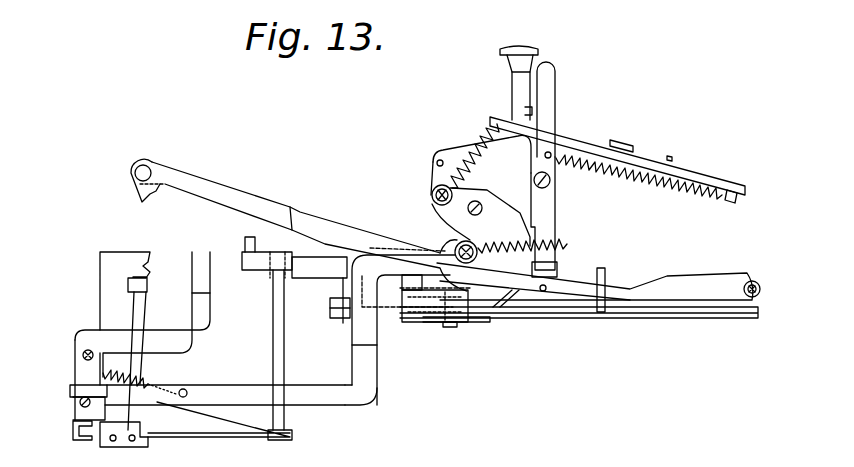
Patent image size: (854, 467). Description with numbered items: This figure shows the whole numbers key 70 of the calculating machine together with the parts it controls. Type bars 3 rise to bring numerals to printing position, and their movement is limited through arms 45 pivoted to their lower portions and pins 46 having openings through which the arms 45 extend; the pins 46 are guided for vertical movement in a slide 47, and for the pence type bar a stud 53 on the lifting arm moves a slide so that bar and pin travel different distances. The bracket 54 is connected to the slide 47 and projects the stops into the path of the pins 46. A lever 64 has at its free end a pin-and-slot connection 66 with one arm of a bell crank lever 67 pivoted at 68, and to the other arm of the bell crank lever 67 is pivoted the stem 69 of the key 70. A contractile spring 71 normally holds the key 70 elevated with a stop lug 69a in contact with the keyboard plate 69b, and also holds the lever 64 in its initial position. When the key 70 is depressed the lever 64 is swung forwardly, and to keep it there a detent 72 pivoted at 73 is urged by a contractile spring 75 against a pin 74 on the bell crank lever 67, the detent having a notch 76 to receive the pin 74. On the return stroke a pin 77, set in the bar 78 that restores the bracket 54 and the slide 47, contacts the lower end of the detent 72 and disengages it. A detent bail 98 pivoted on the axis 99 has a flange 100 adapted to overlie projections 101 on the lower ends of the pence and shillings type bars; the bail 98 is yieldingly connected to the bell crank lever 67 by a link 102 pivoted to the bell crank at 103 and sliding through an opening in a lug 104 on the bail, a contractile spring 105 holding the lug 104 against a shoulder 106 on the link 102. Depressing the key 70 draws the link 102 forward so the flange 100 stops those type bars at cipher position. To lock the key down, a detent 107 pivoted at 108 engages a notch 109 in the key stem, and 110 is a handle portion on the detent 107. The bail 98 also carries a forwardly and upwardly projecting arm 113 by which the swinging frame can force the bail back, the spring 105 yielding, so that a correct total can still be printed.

The type bar 3 is at (112, 254).
The arm 45 is at (218, 428).
The pin 46 is at (286, 407).
The slide 47 is at (268, 311).
The stud 53 is at (332, 300).
The bracket 54 is at (312, 264).
The lever 64 is at (420, 323).
The pin-and-slot connection 66 is at (460, 327).
The bell crank lever 67 is at (490, 212).
The pivot 68 is at (477, 201).
The stem 69 is at (479, 130).
The stop lug 69a is at (507, 130).
The keyboard plate 69b is at (592, 150).
The whole numbers key 70 is at (529, 47).
The contractile spring 71 is at (465, 158).
The detent 72 is at (549, 214).
The pivot 73 is at (551, 181).
The pin 74 is at (484, 246).
The contractile spring 75 is at (639, 177).
The notch 76 is at (549, 222).
The pin 77 is at (547, 300).
The bar 78 is at (667, 277).
The detent bail 98 is at (76, 370).
The axis 99 is at (84, 352).
The flange 100 is at (73, 432).
The projection 101 is at (98, 440).
The link 102 is at (362, 395).
The pivot 103 is at (460, 241).
The lug 104 is at (70, 388).
The contractile spring 105 is at (128, 377).
The shoulder 106 is at (80, 404).
The detent 107 is at (576, 134).
The pivot 108 is at (633, 145).
The notch 109 is at (524, 110).
The handle portion 110 is at (548, 98).
The arm 113 is at (200, 277).